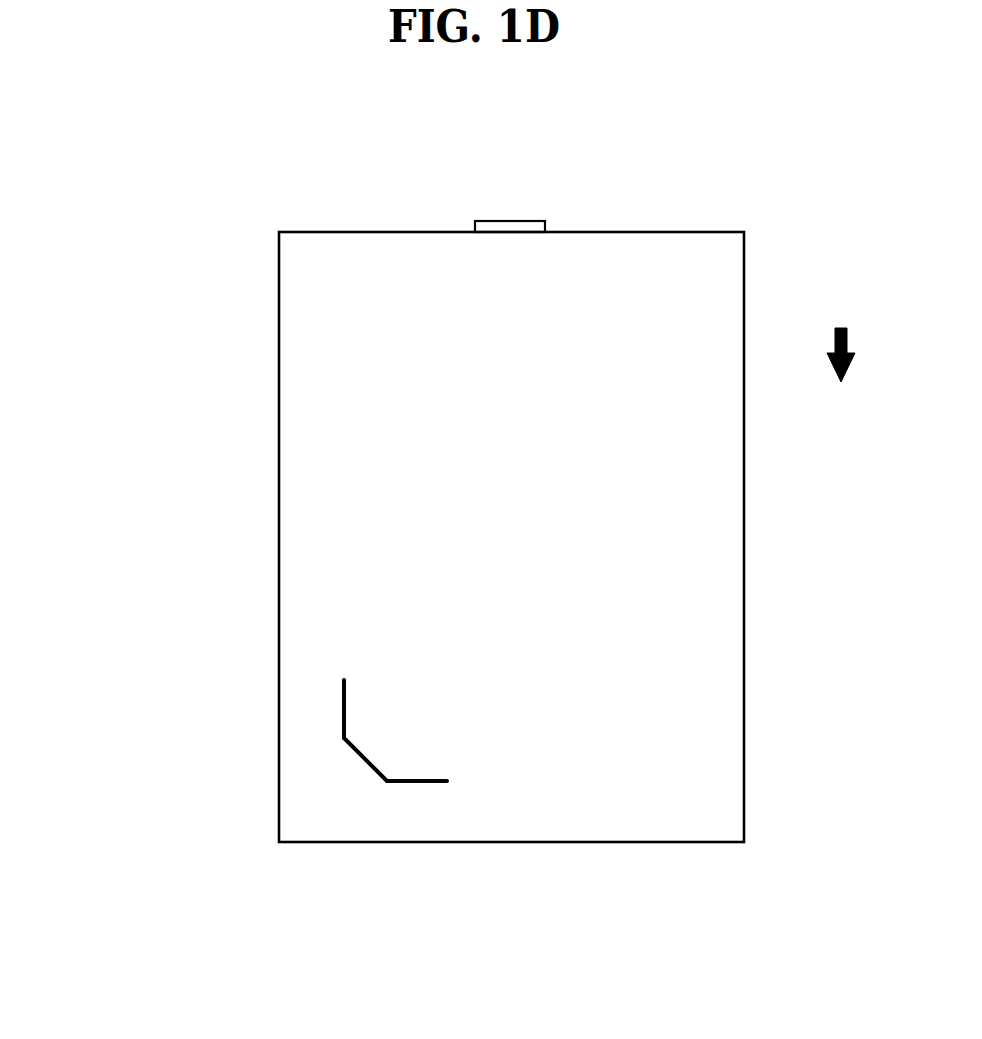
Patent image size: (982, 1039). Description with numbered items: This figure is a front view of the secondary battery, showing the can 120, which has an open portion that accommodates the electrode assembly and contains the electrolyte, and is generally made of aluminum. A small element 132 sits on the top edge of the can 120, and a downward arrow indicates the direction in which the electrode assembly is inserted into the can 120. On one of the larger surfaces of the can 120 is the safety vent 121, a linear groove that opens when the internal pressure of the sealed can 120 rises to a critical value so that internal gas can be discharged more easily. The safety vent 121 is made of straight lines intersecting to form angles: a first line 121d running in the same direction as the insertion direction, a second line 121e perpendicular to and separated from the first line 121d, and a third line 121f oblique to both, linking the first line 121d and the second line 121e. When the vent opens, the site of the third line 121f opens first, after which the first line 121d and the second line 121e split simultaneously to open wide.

The can 120 is at (707, 501).
The tab 132 is at (510, 220).
The safety vent 121 is at (252, 793).
The first line 121d is at (343, 708).
The third line 121f is at (368, 762).
The second line 121e is at (418, 783).